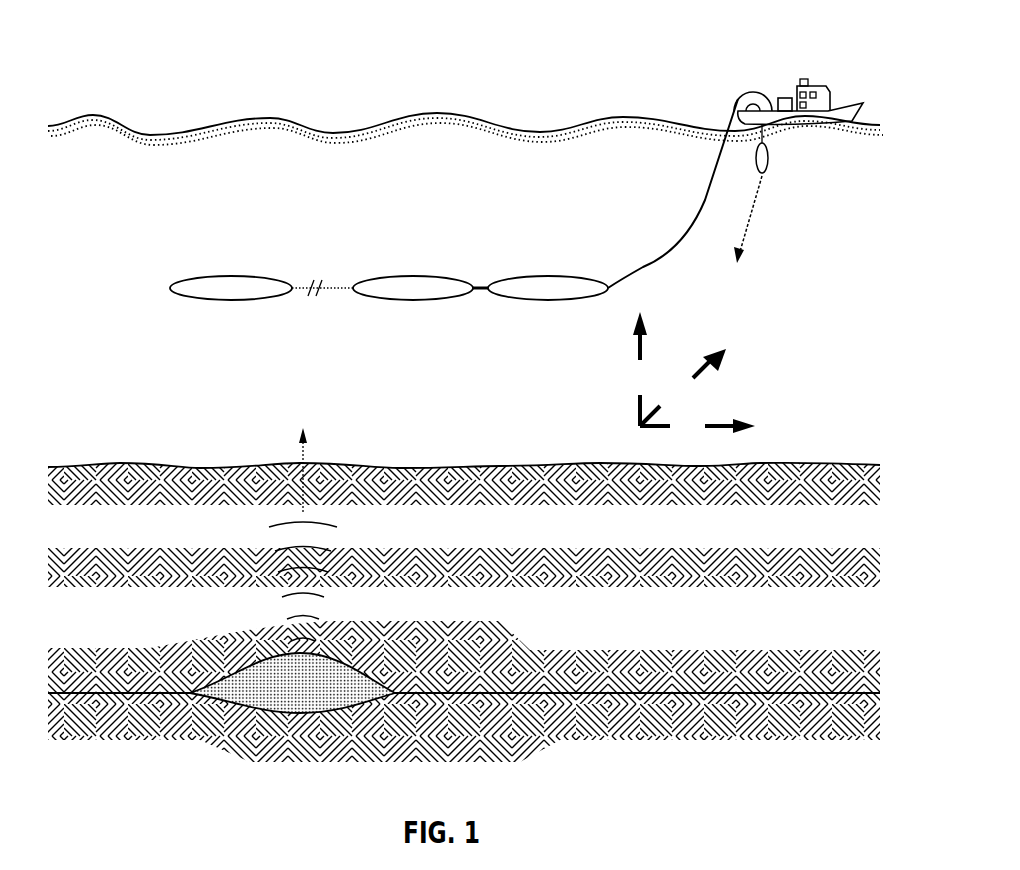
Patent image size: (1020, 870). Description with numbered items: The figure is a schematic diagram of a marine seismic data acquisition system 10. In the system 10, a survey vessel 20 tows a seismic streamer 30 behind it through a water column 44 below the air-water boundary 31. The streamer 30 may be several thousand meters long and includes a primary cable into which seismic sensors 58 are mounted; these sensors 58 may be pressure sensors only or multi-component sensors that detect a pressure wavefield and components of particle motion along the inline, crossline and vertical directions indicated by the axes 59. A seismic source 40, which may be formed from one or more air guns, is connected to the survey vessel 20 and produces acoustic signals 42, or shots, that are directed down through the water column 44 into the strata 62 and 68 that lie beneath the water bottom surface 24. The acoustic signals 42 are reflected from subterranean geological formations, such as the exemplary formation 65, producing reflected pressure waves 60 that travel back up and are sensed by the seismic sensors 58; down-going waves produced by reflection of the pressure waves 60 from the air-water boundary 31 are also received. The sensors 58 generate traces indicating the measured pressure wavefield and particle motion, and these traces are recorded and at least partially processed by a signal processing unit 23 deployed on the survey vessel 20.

The marine seismic data acquisition system 10 is at (249, 80).
The survey vessel 20 is at (857, 103).
The signal processing unit 23 is at (786, 97).
The water bottom surface 24 is at (763, 464).
The seismic streamer 30 is at (702, 201).
The air-water boundary 31 is at (412, 118).
The seismic source 40 is at (769, 159).
The acoustic signal 42 is at (752, 205).
The water column 44 is at (819, 360).
The seismic sensor 58 is at (258, 279).
The axes 59 is at (626, 436).
The pressure wave 60 is at (262, 600).
The stratum 62 is at (469, 666).
The formation 65 is at (316, 697).
The stratum 68 is at (469, 737).